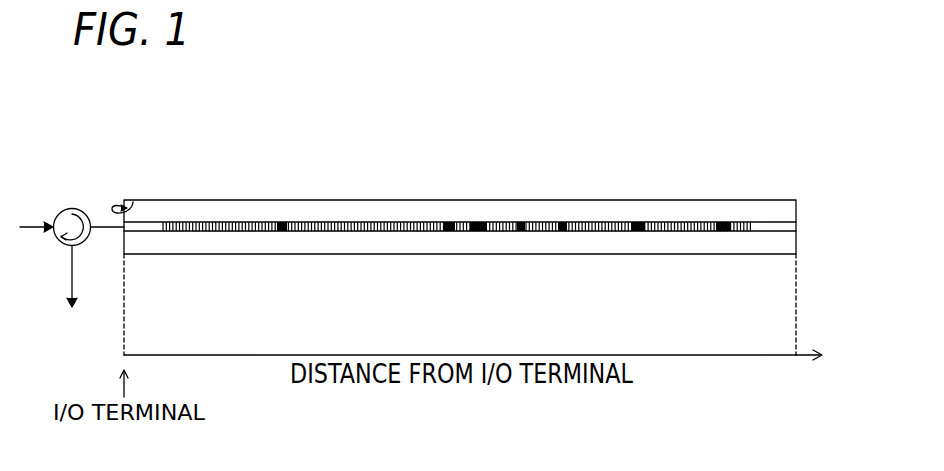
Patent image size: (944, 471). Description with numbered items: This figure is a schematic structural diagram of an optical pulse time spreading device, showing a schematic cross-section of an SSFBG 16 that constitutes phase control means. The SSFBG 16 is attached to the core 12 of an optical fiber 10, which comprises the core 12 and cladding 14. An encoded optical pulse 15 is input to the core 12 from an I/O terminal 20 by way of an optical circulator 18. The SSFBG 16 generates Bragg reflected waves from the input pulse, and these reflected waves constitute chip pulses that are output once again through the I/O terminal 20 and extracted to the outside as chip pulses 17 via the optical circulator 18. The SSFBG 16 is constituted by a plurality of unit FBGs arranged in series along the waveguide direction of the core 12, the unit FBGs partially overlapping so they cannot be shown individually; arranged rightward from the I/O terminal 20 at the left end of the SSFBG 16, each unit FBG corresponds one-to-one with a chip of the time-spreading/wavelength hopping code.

The optical fiber 10 is at (507, 208).
The core 12 is at (787, 229).
The cladding 14 is at (785, 213).
The SSFBG 16 is at (457, 192).
The optical circulator 18 is at (71, 207).
The optical pulse 15 is at (35, 231).
The chip pulse 17 is at (70, 282).
The I/O terminal 20 is at (133, 202).